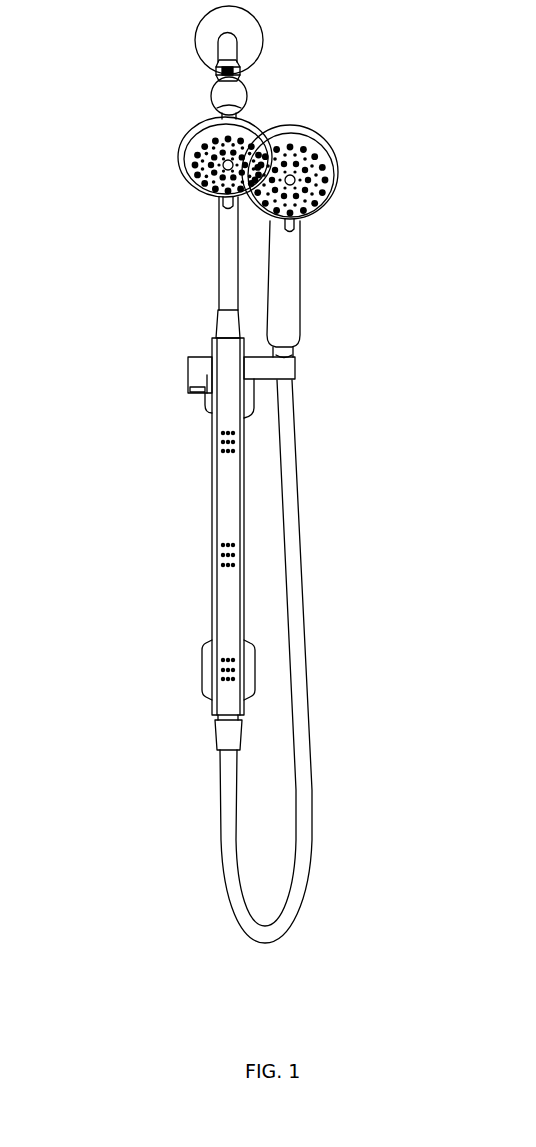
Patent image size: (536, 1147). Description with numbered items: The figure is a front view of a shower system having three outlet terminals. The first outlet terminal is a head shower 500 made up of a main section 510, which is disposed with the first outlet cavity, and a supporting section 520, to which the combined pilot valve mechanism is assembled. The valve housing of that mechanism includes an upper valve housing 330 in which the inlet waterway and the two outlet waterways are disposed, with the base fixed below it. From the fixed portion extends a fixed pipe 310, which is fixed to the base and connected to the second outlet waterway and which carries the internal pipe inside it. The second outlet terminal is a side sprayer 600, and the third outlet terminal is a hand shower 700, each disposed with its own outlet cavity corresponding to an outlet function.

The head shower 500 is at (163, 102).
The supporting section 520 is at (225, 42).
The upper valve housing 330 is at (232, 93).
The main section 510 is at (187, 133).
The hand shower 700 is at (333, 197).
The fixed pipe 310 is at (227, 257).
The side sprayer 600 is at (215, 443).